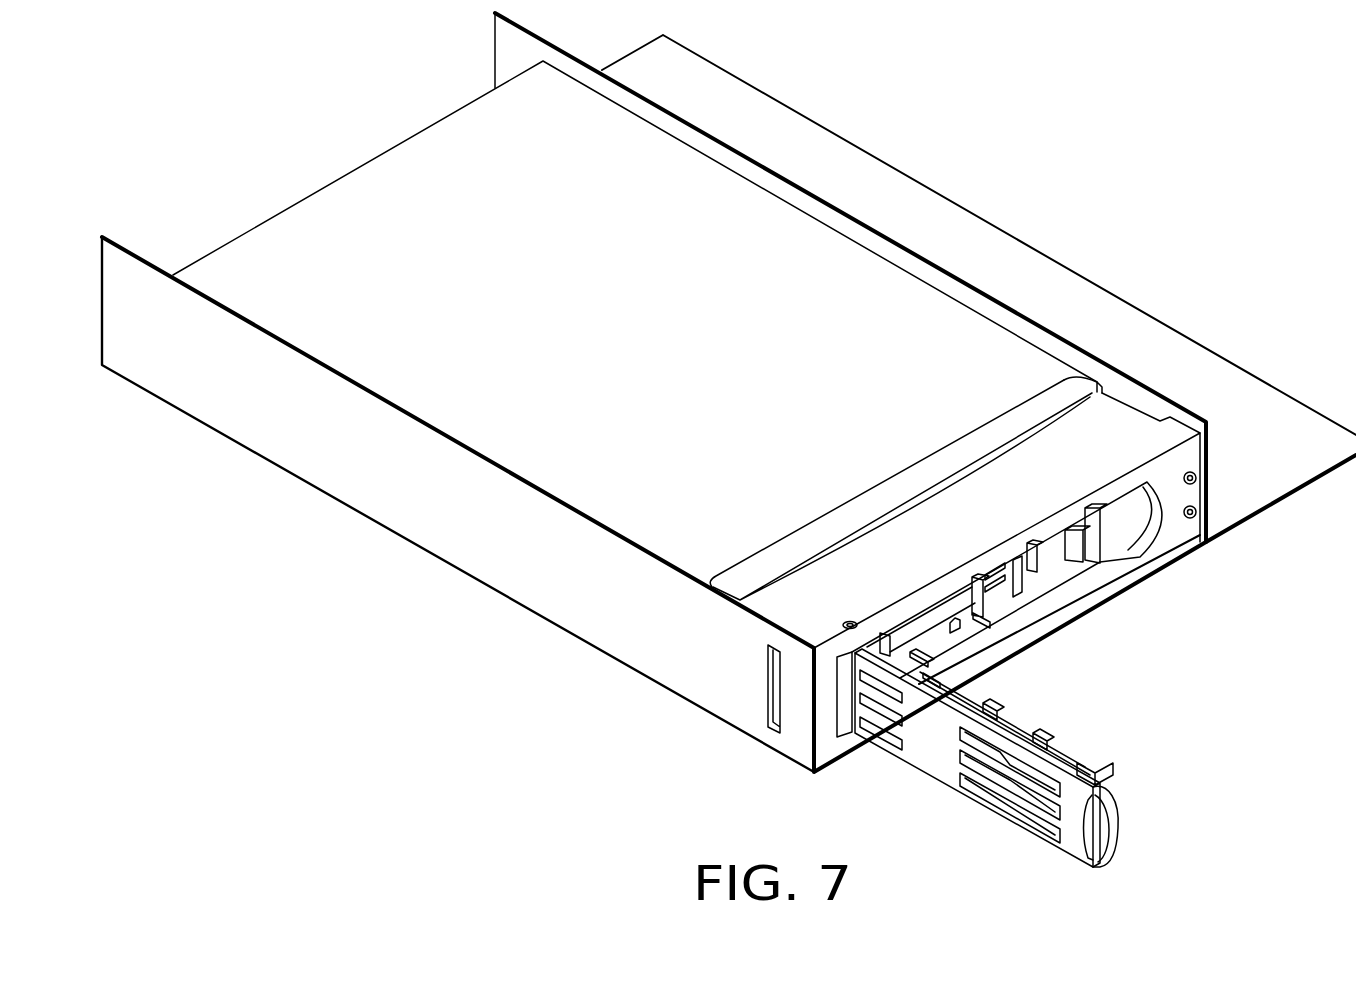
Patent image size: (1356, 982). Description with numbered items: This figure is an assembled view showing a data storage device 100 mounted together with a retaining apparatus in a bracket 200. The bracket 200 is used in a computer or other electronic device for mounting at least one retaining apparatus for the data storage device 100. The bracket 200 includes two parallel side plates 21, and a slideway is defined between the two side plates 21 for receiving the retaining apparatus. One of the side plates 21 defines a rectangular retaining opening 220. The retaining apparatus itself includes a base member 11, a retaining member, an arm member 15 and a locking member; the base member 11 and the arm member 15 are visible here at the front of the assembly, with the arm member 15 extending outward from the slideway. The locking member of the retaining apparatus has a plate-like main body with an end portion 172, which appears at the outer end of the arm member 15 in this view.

The data storage device 100 is at (432, 193).
The bracket 200 is at (964, 243).
The base member 11 is at (1115, 440).
The side plates 21 is at (485, 535).
The retaining opening 220 is at (773, 695).
The arm member 15 is at (930, 750).
The end portion 172 is at (1098, 822).